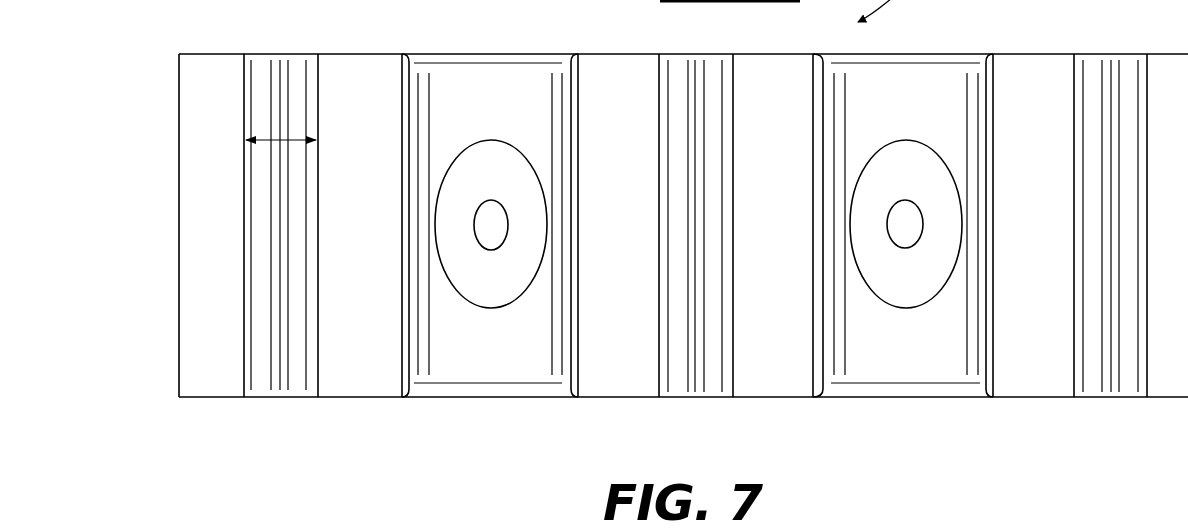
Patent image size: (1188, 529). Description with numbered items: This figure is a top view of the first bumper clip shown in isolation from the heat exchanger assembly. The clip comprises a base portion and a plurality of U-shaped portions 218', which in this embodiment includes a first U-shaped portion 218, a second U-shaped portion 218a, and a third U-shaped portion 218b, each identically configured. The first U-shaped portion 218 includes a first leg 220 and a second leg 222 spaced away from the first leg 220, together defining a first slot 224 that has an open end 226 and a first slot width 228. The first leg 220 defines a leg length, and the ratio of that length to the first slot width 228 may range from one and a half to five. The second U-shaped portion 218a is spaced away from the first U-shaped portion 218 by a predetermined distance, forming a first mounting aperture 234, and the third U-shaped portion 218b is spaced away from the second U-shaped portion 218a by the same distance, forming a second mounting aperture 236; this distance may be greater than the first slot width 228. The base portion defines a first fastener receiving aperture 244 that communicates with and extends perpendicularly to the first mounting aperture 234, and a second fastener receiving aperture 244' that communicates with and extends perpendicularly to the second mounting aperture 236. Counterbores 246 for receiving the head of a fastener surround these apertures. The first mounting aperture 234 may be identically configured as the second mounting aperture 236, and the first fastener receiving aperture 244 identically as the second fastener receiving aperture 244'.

The first U-shaped portion 218 is at (216, 262).
The plurality of U-shaped portions 218' is at (718, 262).
The second U-shaped portion 218a is at (750, 403).
The third U-shaped portion 218b is at (1185, 403).
The first leg 220 is at (187, 336).
The second leg 222 is at (362, 88).
The first slot 224 is at (262, 382).
The open end 226 is at (302, 386).
The first slot width 228 is at (300, 146).
The first mounting aperture 234 is at (528, 88).
The second mounting aperture 236 is at (952, 88).
The first fastener receiving aperture 244 is at (558, 216).
The second fastener receiving aperture 244' is at (905, 283).
The counterbore 246 is at (518, 290).